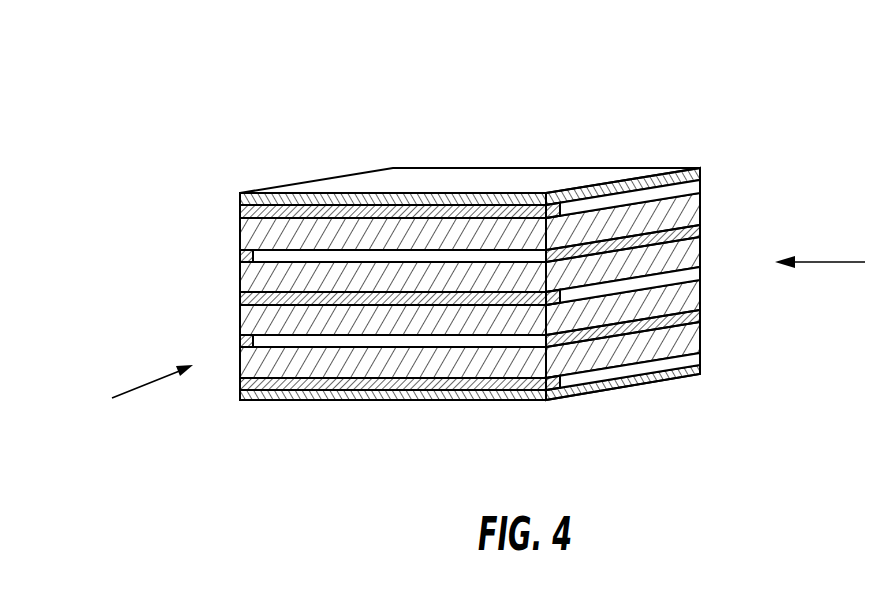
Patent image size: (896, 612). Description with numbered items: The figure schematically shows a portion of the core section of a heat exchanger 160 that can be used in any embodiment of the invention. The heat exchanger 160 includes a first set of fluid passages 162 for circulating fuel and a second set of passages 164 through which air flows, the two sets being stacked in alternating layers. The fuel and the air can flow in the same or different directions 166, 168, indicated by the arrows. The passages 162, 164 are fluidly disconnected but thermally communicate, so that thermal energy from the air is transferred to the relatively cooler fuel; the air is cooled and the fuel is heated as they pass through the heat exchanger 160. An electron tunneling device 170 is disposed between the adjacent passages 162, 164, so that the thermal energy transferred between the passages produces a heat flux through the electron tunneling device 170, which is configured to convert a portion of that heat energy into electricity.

The heat exchanger 160 is at (558, 98).
The first set of fluid passages 162 is at (688, 190).
The second set of passages 164 is at (327, 258).
The fluid flow direction 166 is at (823, 258).
The air flow direction 168 is at (135, 390).
The electron tunneling device 170 is at (240, 233).